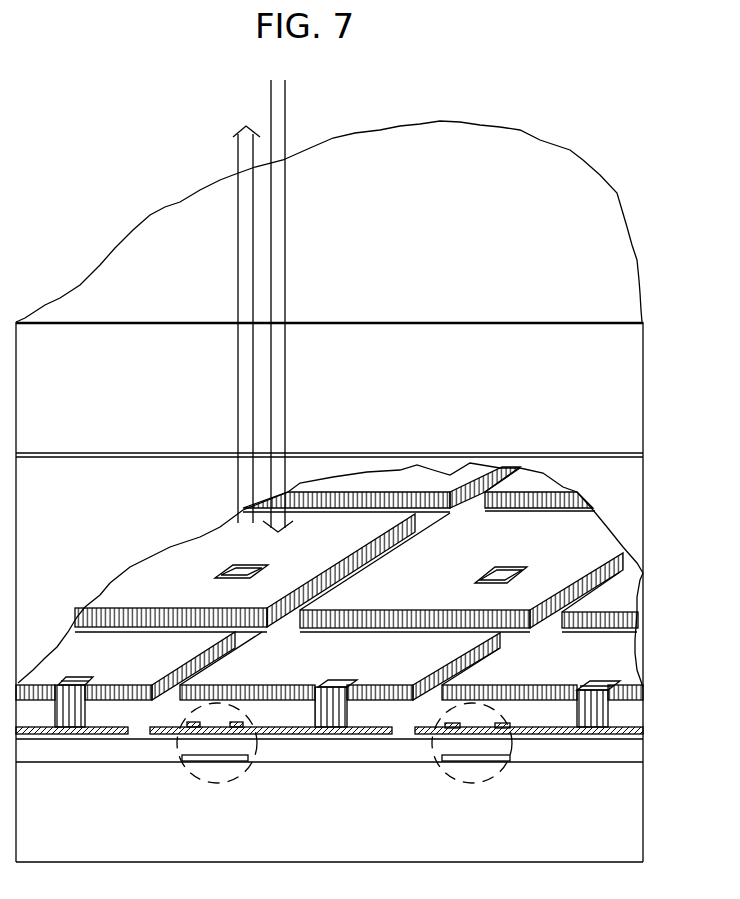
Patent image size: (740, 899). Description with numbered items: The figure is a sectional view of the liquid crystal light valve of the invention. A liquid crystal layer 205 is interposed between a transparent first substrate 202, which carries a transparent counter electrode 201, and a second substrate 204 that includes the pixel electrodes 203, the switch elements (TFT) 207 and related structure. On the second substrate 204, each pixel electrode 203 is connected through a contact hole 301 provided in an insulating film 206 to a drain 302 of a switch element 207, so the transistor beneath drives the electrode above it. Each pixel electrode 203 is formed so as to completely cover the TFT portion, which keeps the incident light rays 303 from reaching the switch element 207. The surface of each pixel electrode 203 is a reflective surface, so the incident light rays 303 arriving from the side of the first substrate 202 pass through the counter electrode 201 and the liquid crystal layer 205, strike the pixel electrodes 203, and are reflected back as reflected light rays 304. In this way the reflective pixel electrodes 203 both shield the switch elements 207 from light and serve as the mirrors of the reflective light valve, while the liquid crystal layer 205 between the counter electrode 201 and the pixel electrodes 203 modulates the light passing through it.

The transparent counter electrode 201 is at (643, 457).
The transparent first substrate 202 is at (647, 357).
The pixel electrode 203 is at (208, 638).
The second substrate 204 is at (638, 806).
The liquid crystal layer 205 is at (643, 518).
The insulating film 206 is at (643, 717).
The switch element (TFT) 207 is at (212, 782).
The contact hole 301 is at (617, 735).
The drain 302 is at (272, 740).
The incident light rays 303 is at (287, 130).
The reflected light rays 304 is at (237, 157).